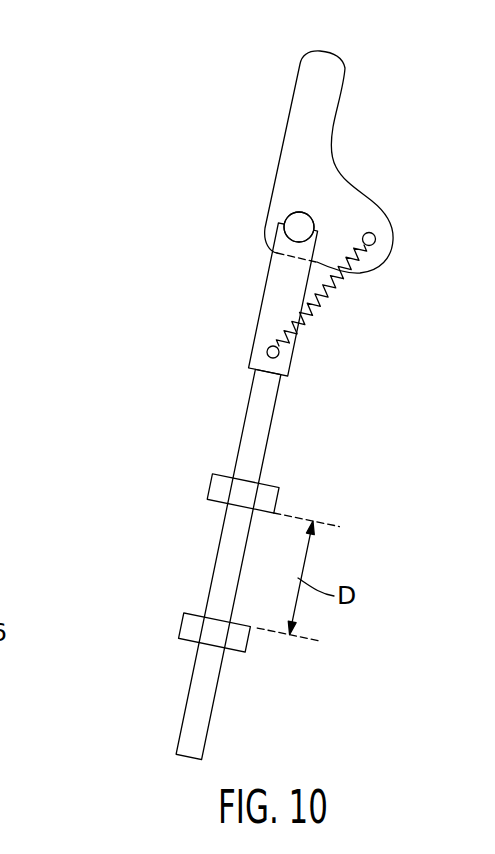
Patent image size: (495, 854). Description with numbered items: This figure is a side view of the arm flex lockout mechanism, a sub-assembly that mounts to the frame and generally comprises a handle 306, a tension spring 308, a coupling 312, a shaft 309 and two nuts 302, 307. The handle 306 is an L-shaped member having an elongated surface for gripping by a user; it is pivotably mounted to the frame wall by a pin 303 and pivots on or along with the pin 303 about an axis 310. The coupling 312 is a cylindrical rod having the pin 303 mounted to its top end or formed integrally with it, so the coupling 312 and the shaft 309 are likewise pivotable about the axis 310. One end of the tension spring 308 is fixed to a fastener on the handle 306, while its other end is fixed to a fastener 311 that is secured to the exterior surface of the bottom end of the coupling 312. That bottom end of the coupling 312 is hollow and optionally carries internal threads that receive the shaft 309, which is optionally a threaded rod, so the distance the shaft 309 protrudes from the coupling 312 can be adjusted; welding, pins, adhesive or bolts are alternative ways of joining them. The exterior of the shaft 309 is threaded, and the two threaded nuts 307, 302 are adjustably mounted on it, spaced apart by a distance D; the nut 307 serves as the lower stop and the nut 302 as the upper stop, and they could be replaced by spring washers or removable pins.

The handle 306 is at (335, 164).
The axis 310 is at (300, 227).
The pin 303 is at (384, 173).
The tension spring 308 is at (335, 287).
The fastener 311 is at (268, 350).
The coupling 312 is at (290, 376).
The nut 302 is at (212, 486).
The shaft 309 is at (232, 565).
The nut 307 is at (182, 624).